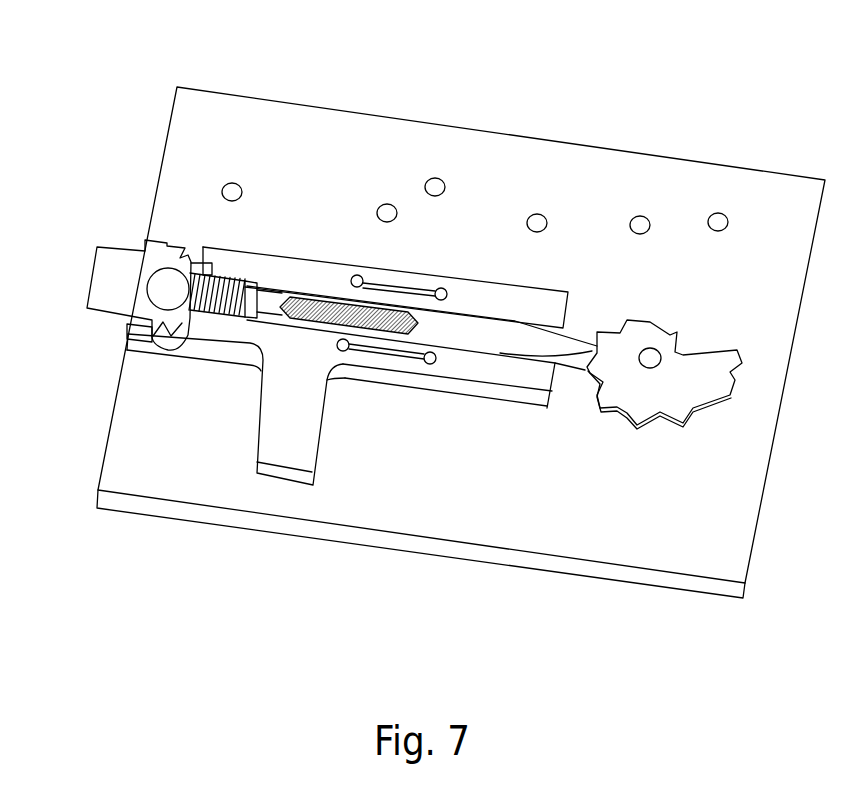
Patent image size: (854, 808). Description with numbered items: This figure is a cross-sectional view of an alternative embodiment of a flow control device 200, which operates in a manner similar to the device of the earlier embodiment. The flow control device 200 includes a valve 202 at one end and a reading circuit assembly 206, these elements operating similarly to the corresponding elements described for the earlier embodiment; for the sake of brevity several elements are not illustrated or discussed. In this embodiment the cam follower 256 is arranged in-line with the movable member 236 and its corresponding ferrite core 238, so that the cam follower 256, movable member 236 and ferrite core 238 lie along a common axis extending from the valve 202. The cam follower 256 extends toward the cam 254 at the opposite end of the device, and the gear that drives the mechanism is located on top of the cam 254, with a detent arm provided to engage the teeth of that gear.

The flow control device 200 is at (230, 48).
The valve 202 is at (94, 237).
The reading circuit assembly 206 is at (427, 279).
The movable member 236 is at (270, 291).
The ferrite core 238 is at (352, 290).
The cam 254 is at (677, 397).
The cam follower 256 is at (505, 337).